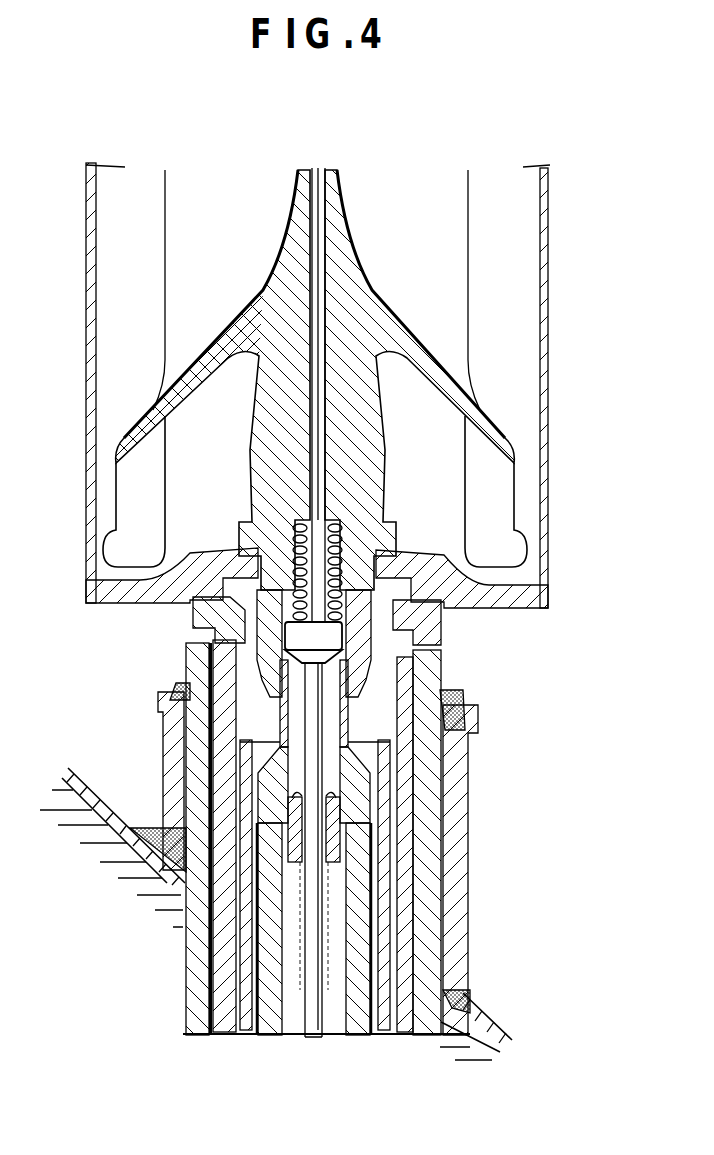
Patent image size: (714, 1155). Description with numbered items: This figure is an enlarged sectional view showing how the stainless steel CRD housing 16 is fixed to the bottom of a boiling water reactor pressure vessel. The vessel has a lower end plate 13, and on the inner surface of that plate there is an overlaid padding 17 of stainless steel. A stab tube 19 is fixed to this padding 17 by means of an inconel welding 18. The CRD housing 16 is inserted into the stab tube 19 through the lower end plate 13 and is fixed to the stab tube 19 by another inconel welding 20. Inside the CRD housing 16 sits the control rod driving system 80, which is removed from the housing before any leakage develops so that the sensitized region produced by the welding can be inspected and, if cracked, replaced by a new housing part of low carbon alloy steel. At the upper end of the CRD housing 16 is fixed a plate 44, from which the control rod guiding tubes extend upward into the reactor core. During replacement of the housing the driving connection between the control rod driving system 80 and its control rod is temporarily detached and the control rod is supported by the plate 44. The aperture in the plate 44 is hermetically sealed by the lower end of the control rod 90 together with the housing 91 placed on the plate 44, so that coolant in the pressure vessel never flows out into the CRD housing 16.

The control rod 90 is at (388, 324).
The housing 91 is at (545, 304).
The plate 44 is at (435, 615).
The inconel welding 20 is at (455, 710).
The stab tube 19 is at (460, 805).
The CRD housing 16 is at (433, 935).
The inconel welding 18 is at (468, 1000).
The overlaid padding 17 is at (102, 805).
The lower end plate 13 is at (115, 837).
The control rod driving system 80 is at (262, 965).